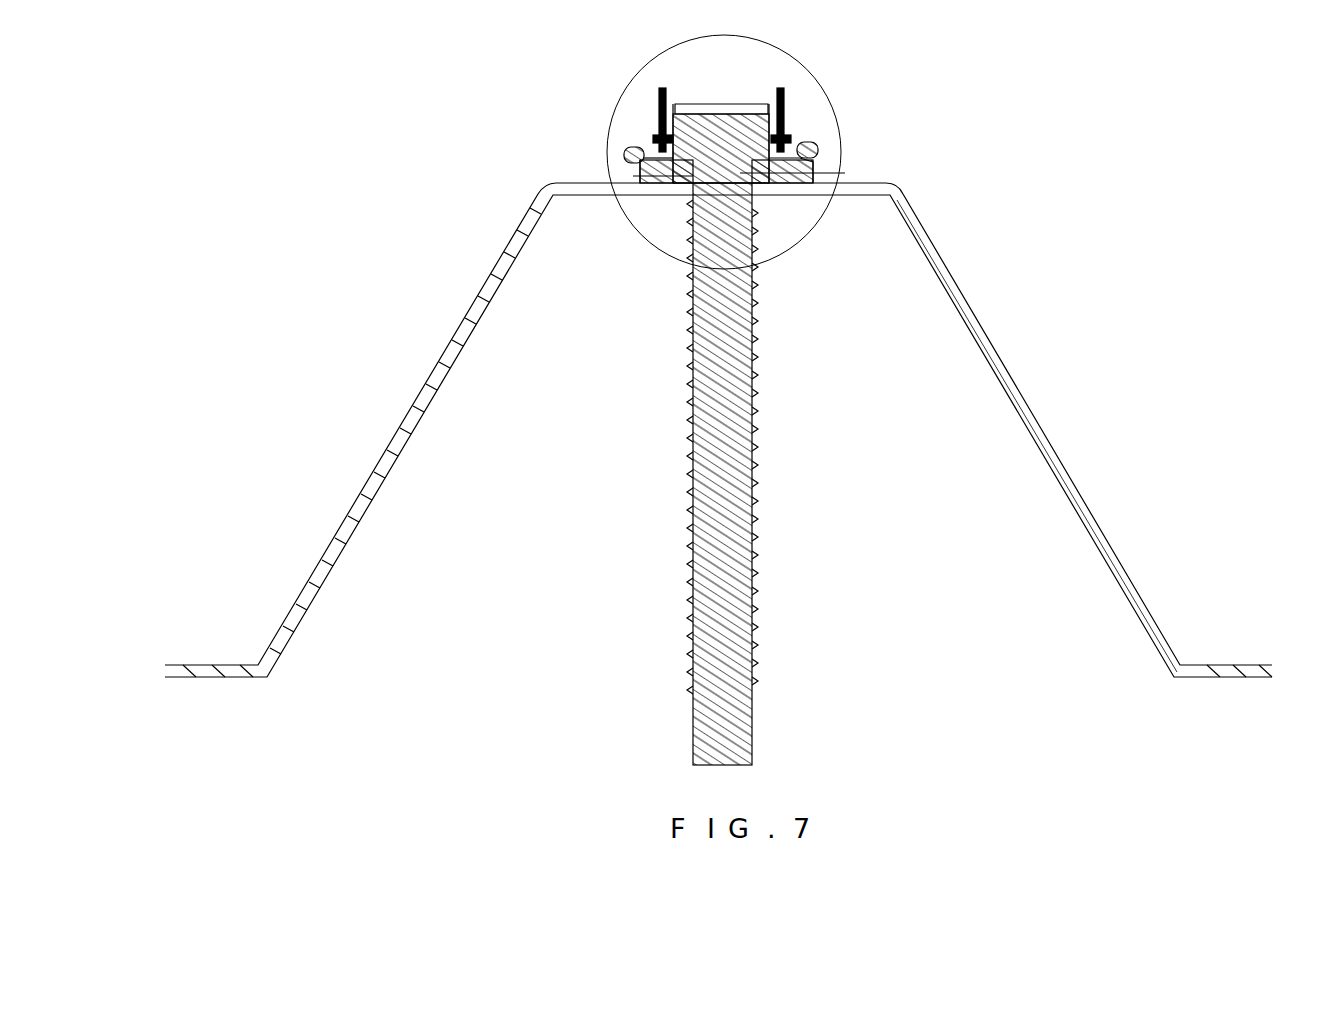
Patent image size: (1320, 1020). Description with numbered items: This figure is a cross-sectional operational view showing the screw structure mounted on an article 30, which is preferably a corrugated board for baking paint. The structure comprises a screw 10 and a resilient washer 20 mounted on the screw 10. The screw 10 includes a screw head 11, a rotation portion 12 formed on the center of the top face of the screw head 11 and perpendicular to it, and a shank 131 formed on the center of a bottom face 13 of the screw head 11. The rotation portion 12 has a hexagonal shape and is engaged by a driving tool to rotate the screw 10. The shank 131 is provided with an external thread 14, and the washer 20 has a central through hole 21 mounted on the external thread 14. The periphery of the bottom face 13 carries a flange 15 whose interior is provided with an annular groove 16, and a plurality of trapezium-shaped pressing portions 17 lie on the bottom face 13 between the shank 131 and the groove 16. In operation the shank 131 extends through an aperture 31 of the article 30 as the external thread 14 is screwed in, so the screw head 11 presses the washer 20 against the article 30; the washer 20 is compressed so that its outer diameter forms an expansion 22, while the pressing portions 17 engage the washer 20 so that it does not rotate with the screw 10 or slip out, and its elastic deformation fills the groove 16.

The screw 10 is at (726, 402).
The screw head 11 is at (744, 102).
The rotation portion 12 is at (657, 128).
The bottom face 13 is at (676, 125).
The shank 131 is at (815, 173).
The external thread 14 is at (692, 422).
The flange 15 is at (818, 150).
The groove 16 is at (788, 138).
The pressing portions 17 is at (672, 180).
The washer 20 is at (624, 160).
The through hole 21 is at (680, 186).
The expansion 22 is at (650, 156).
The article 30 is at (443, 353).
The aperture 31 is at (760, 186).